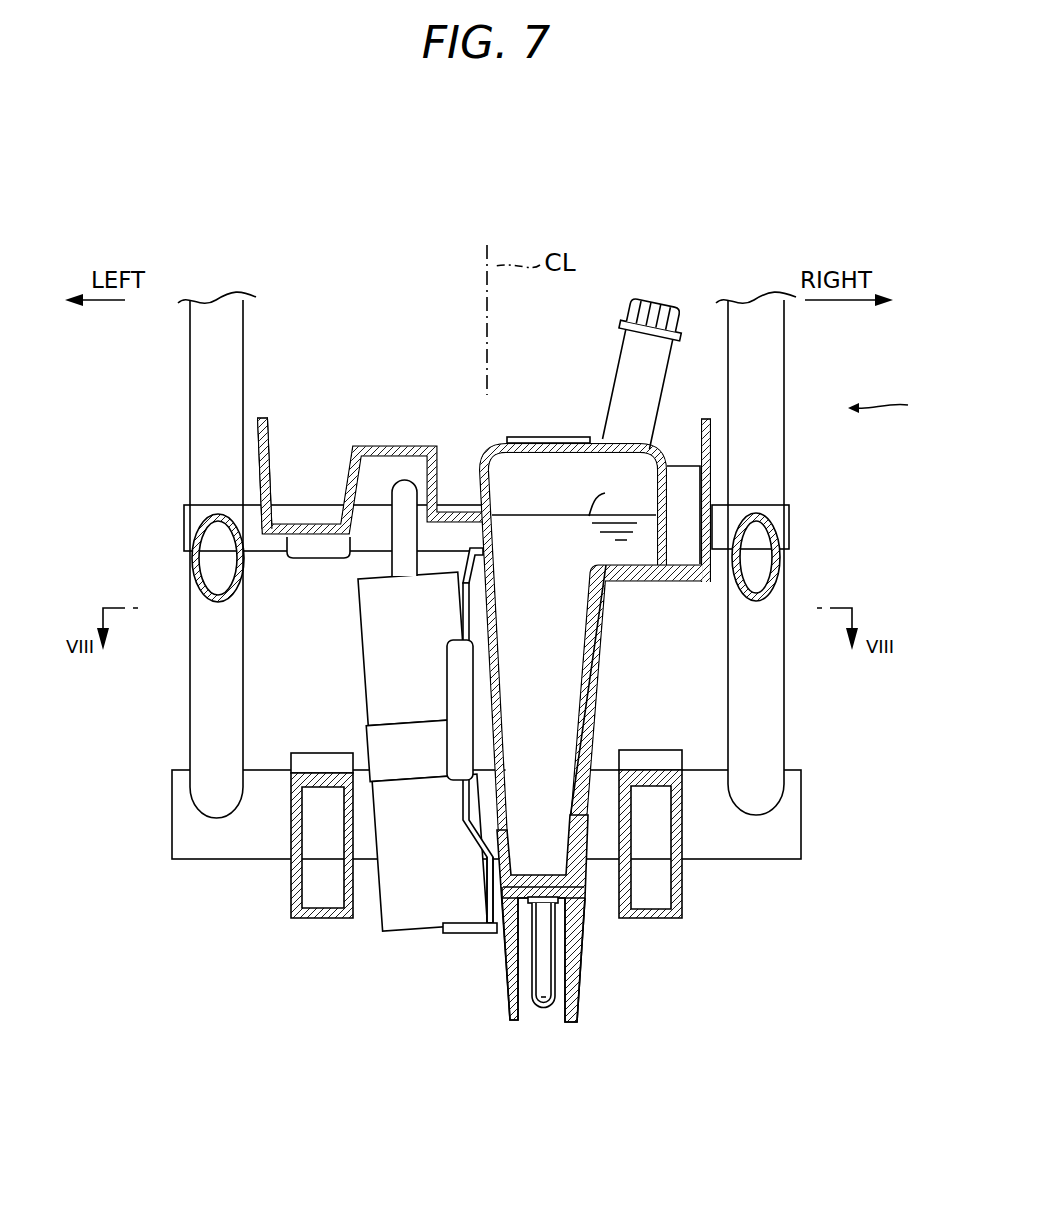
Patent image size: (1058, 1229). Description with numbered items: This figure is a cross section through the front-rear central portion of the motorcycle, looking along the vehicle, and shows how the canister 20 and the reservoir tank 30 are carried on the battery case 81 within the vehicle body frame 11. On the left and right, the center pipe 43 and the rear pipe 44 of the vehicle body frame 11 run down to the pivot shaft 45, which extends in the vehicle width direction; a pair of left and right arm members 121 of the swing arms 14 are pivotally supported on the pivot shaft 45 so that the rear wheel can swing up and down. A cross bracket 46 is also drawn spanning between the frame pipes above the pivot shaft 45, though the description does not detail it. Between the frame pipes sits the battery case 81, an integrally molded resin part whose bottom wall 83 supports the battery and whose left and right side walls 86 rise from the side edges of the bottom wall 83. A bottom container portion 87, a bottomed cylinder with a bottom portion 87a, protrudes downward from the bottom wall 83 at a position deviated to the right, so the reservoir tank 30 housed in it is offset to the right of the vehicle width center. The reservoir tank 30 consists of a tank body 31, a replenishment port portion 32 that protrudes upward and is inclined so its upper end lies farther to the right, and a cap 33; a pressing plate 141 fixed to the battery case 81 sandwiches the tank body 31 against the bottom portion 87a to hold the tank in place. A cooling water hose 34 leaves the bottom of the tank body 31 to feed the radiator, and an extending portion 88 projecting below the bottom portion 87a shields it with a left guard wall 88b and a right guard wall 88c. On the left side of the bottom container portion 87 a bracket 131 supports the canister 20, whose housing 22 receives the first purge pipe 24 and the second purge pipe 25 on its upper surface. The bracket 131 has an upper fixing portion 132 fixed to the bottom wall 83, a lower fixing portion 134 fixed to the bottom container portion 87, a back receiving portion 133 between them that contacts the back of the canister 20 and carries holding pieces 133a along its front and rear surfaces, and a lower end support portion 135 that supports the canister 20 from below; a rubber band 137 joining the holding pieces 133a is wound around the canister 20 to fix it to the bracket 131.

The vehicle body frame 11 is at (894, 405).
The canister 20 is at (350, 678).
The housing 22 is at (392, 905).
The first purge pipe 24 is at (389, 472).
The second purge pipe 25 is at (403, 527).
The reservoir tank 30 is at (664, 441).
The tank body 31 is at (597, 717).
The replenishment port portion 32 is at (636, 375).
The cap 33 is at (660, 308).
The cooling water hose 34 is at (541, 990).
The center pipe 43 is at (203, 360).
The rear pipe 44 is at (205, 698).
The pivot shaft 45 is at (801, 826).
The upper cross bracket 46 is at (791, 520).
The battery case 81 is at (485, 678).
The bottom wall 83 is at (467, 506).
The side walls 86 is at (258, 436).
The bottom container portion 87 is at (603, 656).
The bottom portion 87a is at (578, 920).
The extending portion 88 is at (542, 960).
The left guard wall 88b is at (510, 1000).
The right guard wall 88c is at (580, 970).
The arm members 121 is at (487, 838).
The swing arms 14 is at (292, 893).
The bracket 131 is at (426, 768).
The upper fixing portion 132 is at (490, 553).
The back receiving portion 133 is at (471, 622).
The holding pieces 133a is at (462, 711).
The lower fixing portion 134 is at (492, 880).
The lower end support portion 135 is at (473, 935).
The rubber band 137 is at (380, 745).
The pressing plate 141 is at (539, 437).